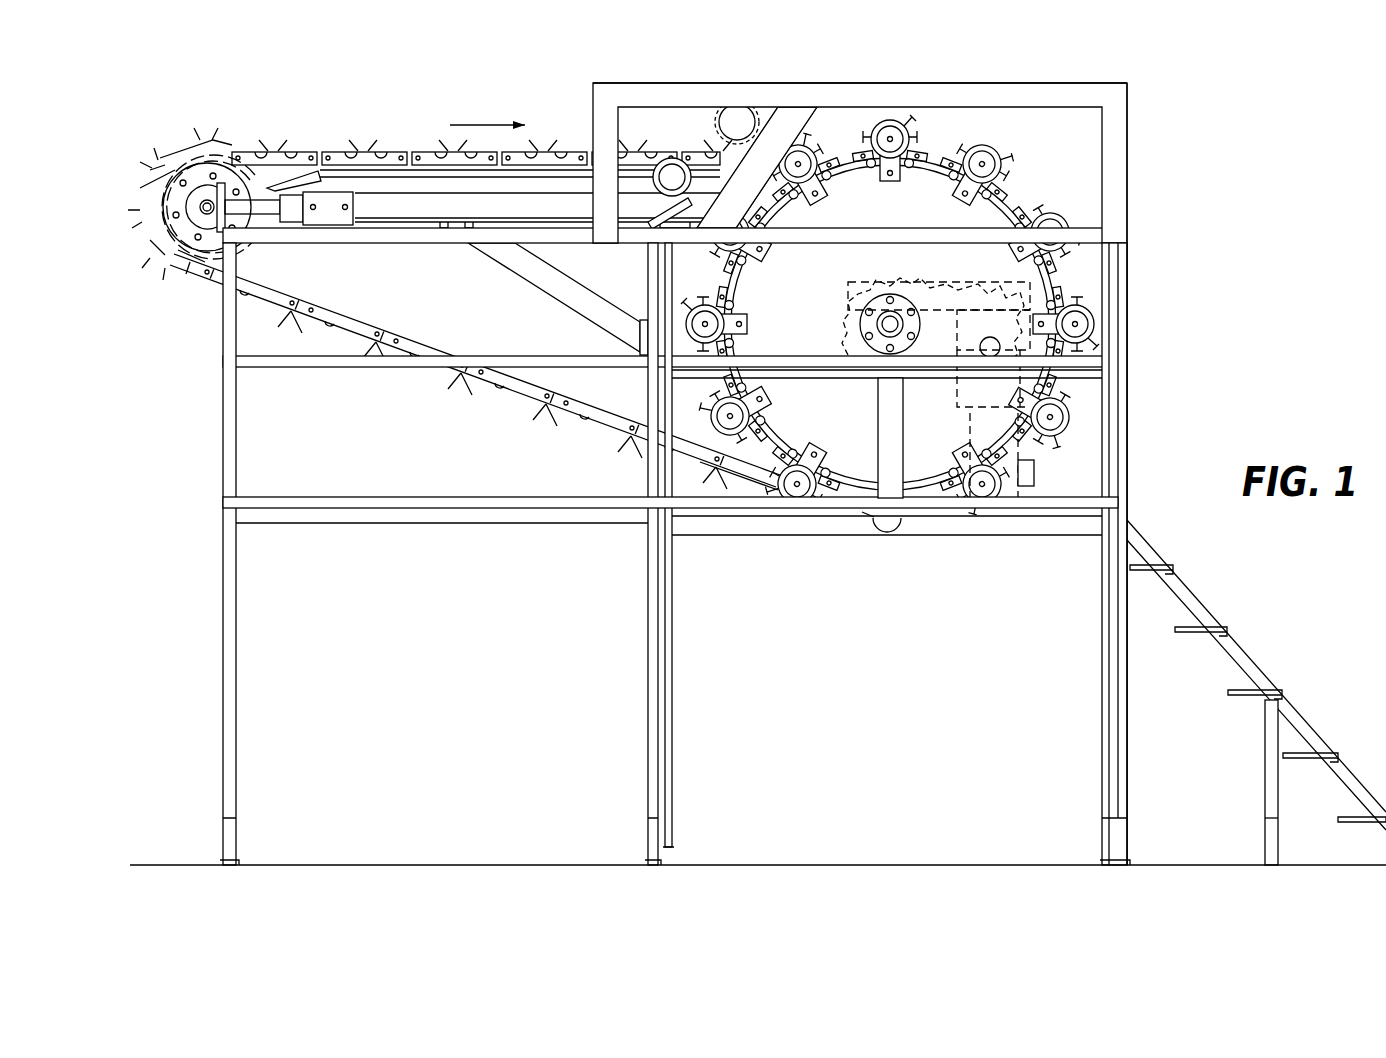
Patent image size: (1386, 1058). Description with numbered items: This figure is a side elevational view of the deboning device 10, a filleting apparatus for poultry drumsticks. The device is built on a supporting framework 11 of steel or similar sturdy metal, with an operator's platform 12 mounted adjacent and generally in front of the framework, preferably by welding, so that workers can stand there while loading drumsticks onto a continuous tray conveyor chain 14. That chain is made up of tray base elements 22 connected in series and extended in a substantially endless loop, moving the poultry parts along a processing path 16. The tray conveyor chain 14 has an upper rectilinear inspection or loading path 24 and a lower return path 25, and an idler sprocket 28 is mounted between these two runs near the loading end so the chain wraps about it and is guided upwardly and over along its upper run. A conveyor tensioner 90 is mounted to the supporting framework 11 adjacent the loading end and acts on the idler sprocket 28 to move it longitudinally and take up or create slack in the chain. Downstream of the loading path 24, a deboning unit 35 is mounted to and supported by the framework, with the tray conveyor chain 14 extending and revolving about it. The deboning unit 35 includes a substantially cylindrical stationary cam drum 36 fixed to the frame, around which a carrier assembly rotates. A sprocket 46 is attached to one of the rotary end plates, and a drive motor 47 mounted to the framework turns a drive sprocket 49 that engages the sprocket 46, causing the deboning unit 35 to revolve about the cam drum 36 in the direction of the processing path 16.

The deboning device 10 is at (1199, 149).
The supporting framework 11 is at (1113, 204).
The operator's platform 12 is at (305, 502).
The tray conveyor chain 14 is at (387, 138).
The processing path 16 is at (490, 120).
The tray base elements 22 is at (493, 387).
The upper rectilinear inspection or loading path 24 is at (650, 137).
The lower return path 25 is at (573, 422).
The idler sprocket 28 is at (180, 230).
The deboning unit 35 is at (1043, 146).
The cam drum 36 is at (855, 466).
The sprocket 46 is at (887, 280).
The drive motor 47 is at (1028, 476).
The drive sprocket 49 is at (998, 281).
The conveyor tensioner 90 is at (330, 214).